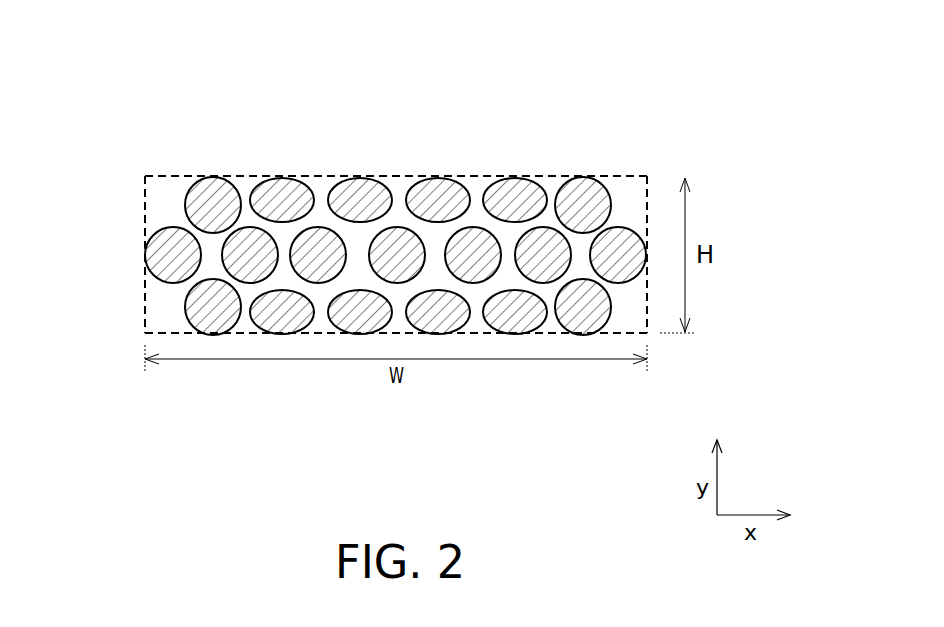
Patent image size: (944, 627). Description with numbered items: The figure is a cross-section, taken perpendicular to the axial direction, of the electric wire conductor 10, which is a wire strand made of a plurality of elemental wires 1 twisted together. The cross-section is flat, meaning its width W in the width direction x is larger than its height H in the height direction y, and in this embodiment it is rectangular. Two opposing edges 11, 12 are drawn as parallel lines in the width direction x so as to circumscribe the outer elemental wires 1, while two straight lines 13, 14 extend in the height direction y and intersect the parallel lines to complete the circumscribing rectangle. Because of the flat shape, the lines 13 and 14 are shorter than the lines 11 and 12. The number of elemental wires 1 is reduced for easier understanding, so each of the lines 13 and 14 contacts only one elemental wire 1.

The elemental wire 1 is at (203, 200).
The electric wire conductor 10 is at (277, 90).
The edge 11 is at (533, 177).
The edge 12 is at (554, 334).
The straight line 13 is at (145, 225).
The straight line 14 is at (652, 228).